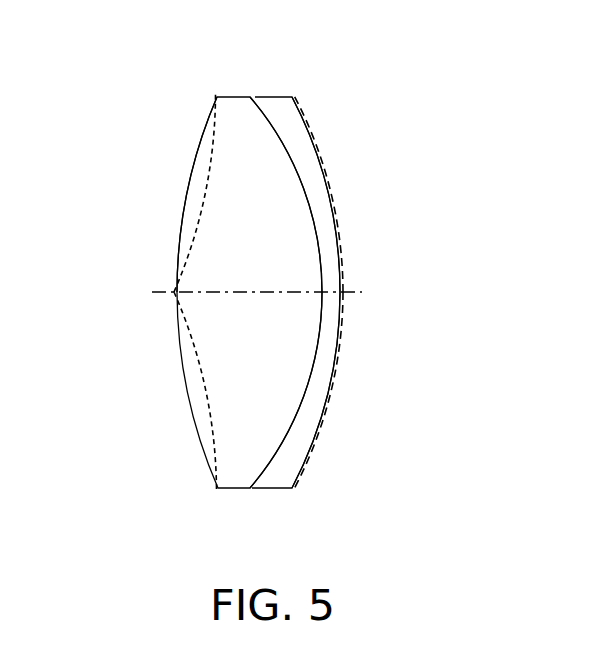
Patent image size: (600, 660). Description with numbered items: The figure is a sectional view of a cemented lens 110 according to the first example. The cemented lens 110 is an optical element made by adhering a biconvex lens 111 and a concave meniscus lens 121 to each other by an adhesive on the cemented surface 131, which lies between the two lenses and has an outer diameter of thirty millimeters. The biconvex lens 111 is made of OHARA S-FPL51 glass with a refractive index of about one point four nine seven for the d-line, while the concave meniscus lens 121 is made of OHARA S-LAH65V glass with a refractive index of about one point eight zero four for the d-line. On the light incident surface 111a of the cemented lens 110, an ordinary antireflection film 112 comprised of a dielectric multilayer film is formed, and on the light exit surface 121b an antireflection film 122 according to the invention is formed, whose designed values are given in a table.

The cemented lens 110 is at (260, 297).
The biconvex lens 111 is at (180, 254).
The light incident surface 111a is at (177, 257).
The antireflection film 112 is at (177, 355).
The concave meniscus lens 121 is at (366, 254).
The light exit surface 121b is at (340, 257).
The antireflection film 122 is at (370, 293).
The cemented surface 131 is at (302, 182).